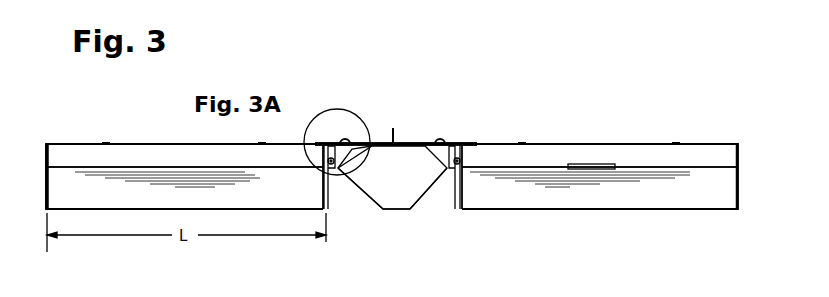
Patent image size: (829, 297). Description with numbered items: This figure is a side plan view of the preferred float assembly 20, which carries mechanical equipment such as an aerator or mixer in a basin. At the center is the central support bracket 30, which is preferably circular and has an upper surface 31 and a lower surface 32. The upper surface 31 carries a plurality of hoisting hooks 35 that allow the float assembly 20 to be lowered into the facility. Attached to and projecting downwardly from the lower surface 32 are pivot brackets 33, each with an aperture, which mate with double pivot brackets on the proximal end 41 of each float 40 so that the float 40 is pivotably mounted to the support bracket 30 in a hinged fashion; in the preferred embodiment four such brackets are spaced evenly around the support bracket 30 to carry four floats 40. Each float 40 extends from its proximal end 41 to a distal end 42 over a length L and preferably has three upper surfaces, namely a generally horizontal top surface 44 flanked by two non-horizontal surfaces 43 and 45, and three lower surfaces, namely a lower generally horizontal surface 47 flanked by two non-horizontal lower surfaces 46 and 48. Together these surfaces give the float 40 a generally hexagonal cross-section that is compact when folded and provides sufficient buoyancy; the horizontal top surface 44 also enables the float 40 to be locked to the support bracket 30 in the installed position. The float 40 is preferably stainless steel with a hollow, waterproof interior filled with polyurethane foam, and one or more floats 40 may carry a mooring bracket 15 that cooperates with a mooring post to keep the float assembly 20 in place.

The mooring bracket 15 is at (593, 164).
The float assembly 20 is at (670, 104).
The central support bracket 30 is at (468, 128).
The upper surface 31 is at (478, 143).
The lower surface 32 is at (350, 152).
The pivot bracket 33 is at (452, 188).
The hoisting hook 35 is at (345, 140).
The float 40 is at (655, 142).
The proximal end 41 is at (329, 209).
The distal end 42 is at (46, 174).
The non-horizontal upper surface 43 is at (372, 146).
The generally horizontal top surface 44 is at (133, 144).
The non-horizontal upper surface 45 is at (84, 152).
The non-horizontal lower surface 46 is at (372, 202).
The lower generally horizontal surface 47 is at (240, 208).
The non-horizontal lower surface 48 is at (87, 207).